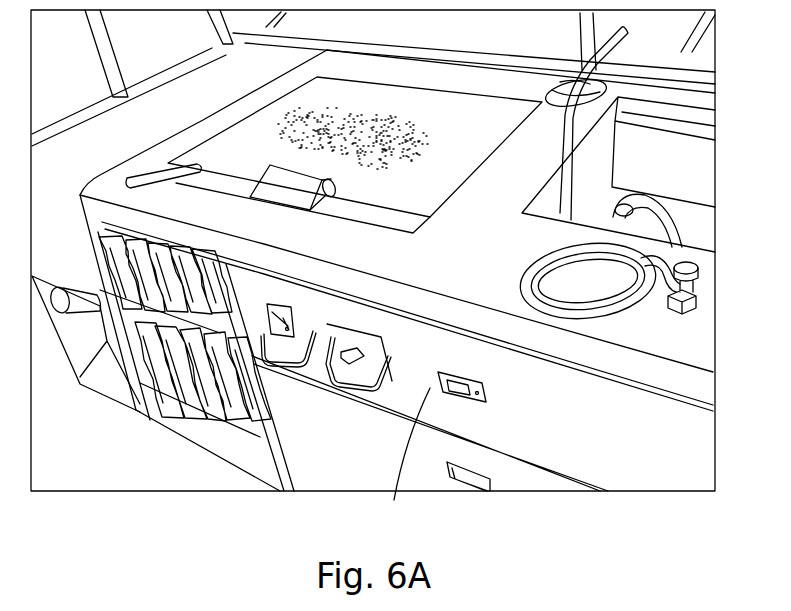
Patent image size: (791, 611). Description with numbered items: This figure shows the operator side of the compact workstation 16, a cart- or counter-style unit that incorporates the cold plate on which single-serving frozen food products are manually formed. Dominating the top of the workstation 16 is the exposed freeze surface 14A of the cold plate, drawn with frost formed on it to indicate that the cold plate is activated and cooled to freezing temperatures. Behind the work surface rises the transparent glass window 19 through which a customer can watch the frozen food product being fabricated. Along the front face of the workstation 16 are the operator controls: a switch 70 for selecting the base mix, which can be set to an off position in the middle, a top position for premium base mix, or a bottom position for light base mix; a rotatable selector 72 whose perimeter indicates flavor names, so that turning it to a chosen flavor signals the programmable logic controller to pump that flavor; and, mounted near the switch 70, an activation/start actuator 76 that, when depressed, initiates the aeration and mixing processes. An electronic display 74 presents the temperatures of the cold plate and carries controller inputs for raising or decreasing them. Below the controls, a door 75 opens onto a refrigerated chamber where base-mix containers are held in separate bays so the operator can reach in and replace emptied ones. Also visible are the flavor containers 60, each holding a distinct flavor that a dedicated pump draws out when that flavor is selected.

The transparent glass window 19 is at (680, 50).
The exposed freeze surface 14A is at (441, 170).
The switch 70 is at (285, 330).
The selector 72 is at (354, 364).
The electronic display 74 is at (477, 395).
The door 75 is at (440, 478).
The activation/start actuator 76 is at (405, 462).
The flavor containers 60 is at (185, 494).
The workstation 16 is at (650, 445).